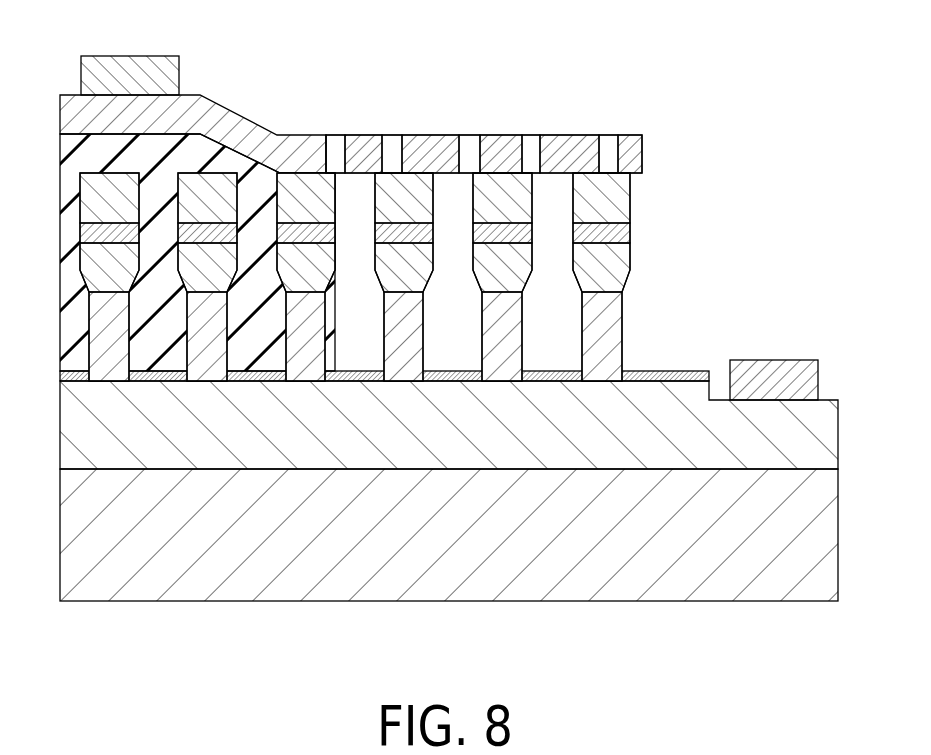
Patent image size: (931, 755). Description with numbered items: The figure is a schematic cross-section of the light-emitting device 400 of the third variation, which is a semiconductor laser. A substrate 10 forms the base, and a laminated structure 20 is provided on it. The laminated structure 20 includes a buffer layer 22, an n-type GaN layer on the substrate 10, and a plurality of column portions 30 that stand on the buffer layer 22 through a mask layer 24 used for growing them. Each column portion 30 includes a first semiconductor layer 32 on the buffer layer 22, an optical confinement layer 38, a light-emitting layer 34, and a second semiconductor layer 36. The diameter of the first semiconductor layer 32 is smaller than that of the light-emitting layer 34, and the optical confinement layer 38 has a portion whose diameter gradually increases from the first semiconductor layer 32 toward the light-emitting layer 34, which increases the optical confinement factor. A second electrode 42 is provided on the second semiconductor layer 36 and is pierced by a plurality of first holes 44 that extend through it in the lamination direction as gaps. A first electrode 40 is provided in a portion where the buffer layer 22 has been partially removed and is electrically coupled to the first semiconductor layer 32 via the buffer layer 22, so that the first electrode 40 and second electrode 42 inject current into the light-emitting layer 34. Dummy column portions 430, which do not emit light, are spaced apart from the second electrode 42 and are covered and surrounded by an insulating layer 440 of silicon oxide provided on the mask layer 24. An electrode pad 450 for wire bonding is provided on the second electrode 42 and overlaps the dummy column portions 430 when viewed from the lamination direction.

The substrate 10 is at (328, 540).
The laminated structure 20 is at (498, 233).
The buffer layer 22 is at (410, 433).
The mask layer 24 is at (672, 371).
The column portion 30 is at (498, 233).
The first semiconductor layer 32 is at (484, 328).
The light-emitting layer 34 is at (607, 229).
The second semiconductor layer 36 is at (605, 188).
The optical confinement layer 38 is at (603, 275).
The first electrode 40 is at (780, 380).
The second electrode 42 is at (575, 155).
The first hole 44 is at (337, 150).
The light-emitting device 400 is at (449, 335).
The dummy column portion 430 is at (108, 197).
The insulating layer 440 is at (257, 227).
The electrode pad 450 is at (146, 78).